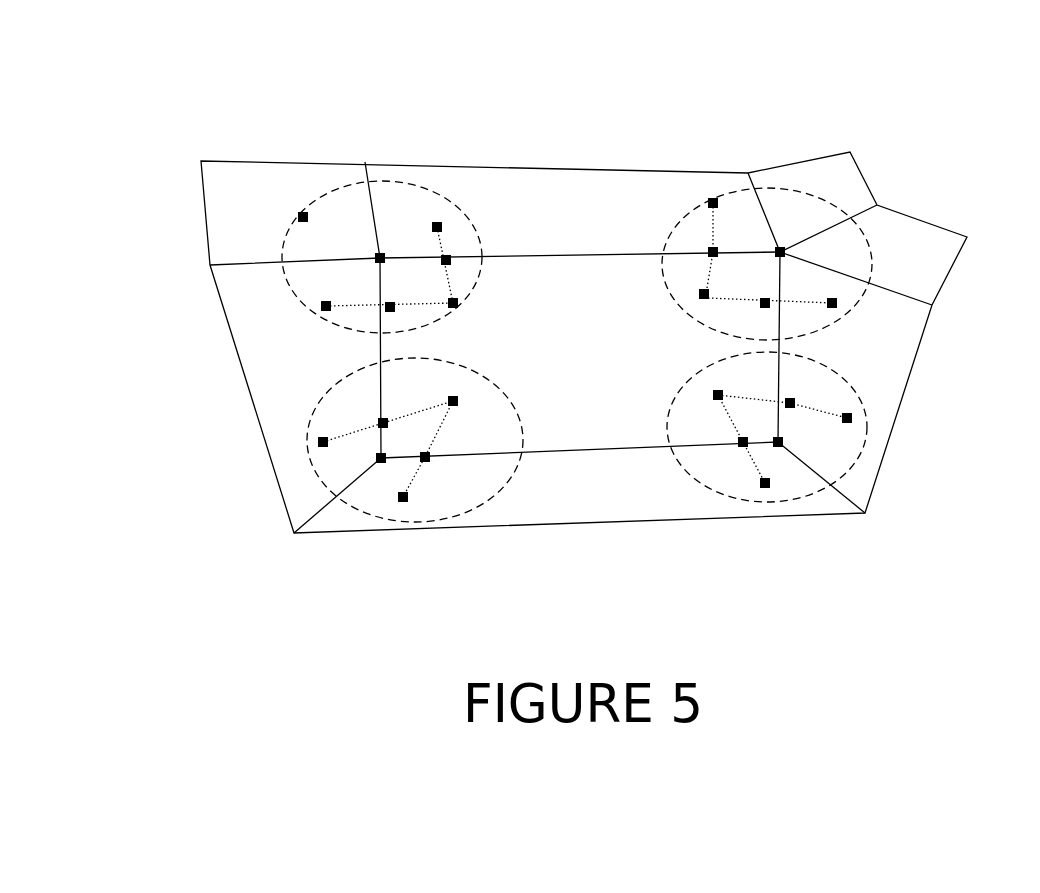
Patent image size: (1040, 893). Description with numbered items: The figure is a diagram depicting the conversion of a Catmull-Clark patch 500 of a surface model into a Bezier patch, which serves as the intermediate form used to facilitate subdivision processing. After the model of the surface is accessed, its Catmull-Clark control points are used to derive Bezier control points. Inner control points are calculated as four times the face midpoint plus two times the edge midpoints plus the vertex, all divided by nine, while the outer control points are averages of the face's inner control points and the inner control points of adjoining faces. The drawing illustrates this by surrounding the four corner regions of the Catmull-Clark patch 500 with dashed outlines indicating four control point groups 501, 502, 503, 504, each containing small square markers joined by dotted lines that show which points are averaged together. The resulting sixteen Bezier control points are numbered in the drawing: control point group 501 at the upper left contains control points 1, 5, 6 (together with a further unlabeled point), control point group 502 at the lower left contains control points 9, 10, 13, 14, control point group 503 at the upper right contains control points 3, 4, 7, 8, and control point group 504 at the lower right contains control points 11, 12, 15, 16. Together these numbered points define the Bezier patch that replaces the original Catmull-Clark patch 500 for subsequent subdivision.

The Catmull-Clark patch 500 is at (115, 64).
The control point group 501 is at (481, 300).
The control point group 502 is at (503, 405).
The control point group 503 is at (663, 282).
The control point group 504 is at (672, 420).
The control point 1 is at (385, 256).
The control point 3 is at (716, 250).
The control point 4 is at (785, 250).
The control point 5 is at (394, 306).
The control point 6 is at (458, 301).
The control point 7 is at (703, 291).
The control point 8 is at (766, 307).
The control point 9 is at (386, 421).
The control point 10 is at (450, 399).
The control point 11 is at (722, 393).
The control point 12 is at (791, 400).
The control point 13 is at (378, 458).
The control point 14 is at (428, 460).
The control point 15 is at (742, 446).
The control point 16 is at (783, 440).